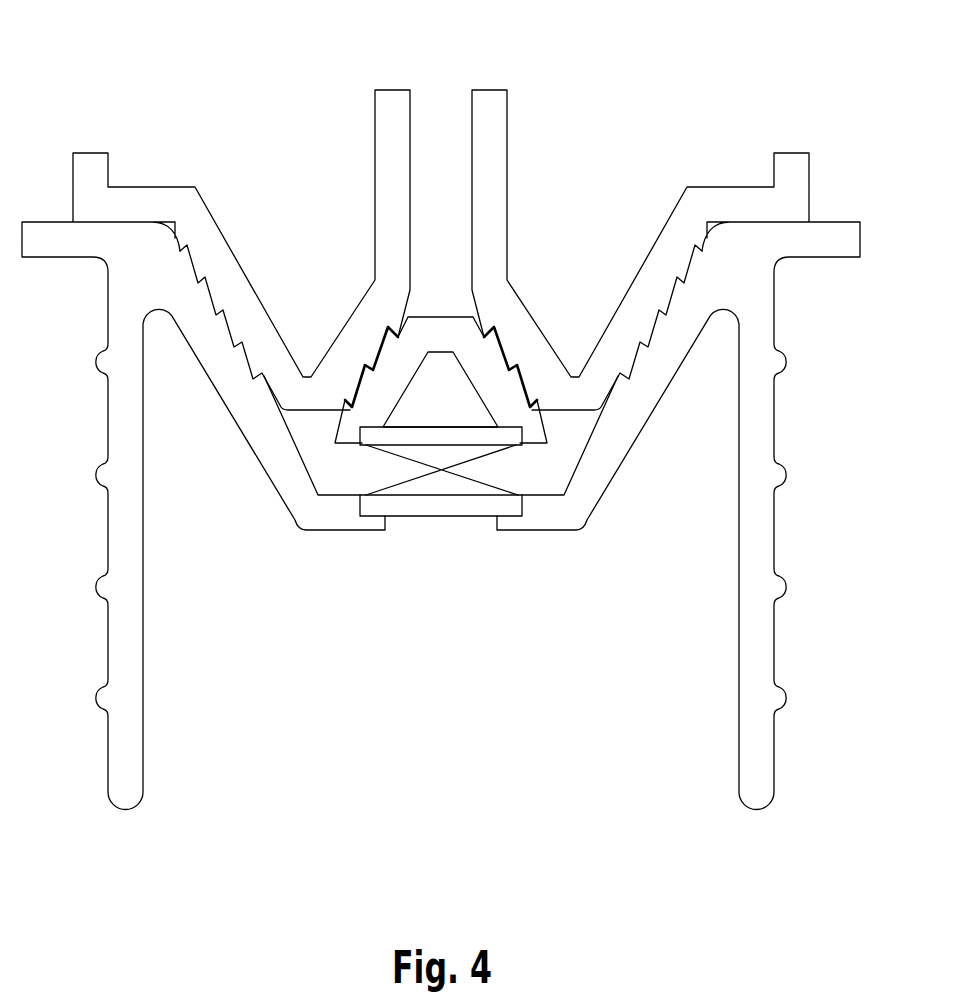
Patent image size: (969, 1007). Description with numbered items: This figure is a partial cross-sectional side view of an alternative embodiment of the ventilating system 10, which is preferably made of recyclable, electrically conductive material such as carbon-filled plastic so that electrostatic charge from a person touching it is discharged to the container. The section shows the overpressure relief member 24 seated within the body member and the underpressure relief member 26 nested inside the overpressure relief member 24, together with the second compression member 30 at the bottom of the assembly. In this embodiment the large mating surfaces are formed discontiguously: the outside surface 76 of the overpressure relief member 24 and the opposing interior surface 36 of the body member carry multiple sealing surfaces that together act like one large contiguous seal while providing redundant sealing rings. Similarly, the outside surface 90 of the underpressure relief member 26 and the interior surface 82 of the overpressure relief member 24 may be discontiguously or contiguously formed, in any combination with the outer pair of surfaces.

The ventilating system 10 is at (458, 407).
The overpressure relief member 24 is at (667, 262).
The underpressure relief member 26 is at (527, 432).
The second compression member 30 is at (475, 503).
The interior surface 36 is at (605, 434).
The outside surface 76 is at (633, 362).
The interior surface 82 is at (355, 379).
The outside surface 90 is at (337, 427).